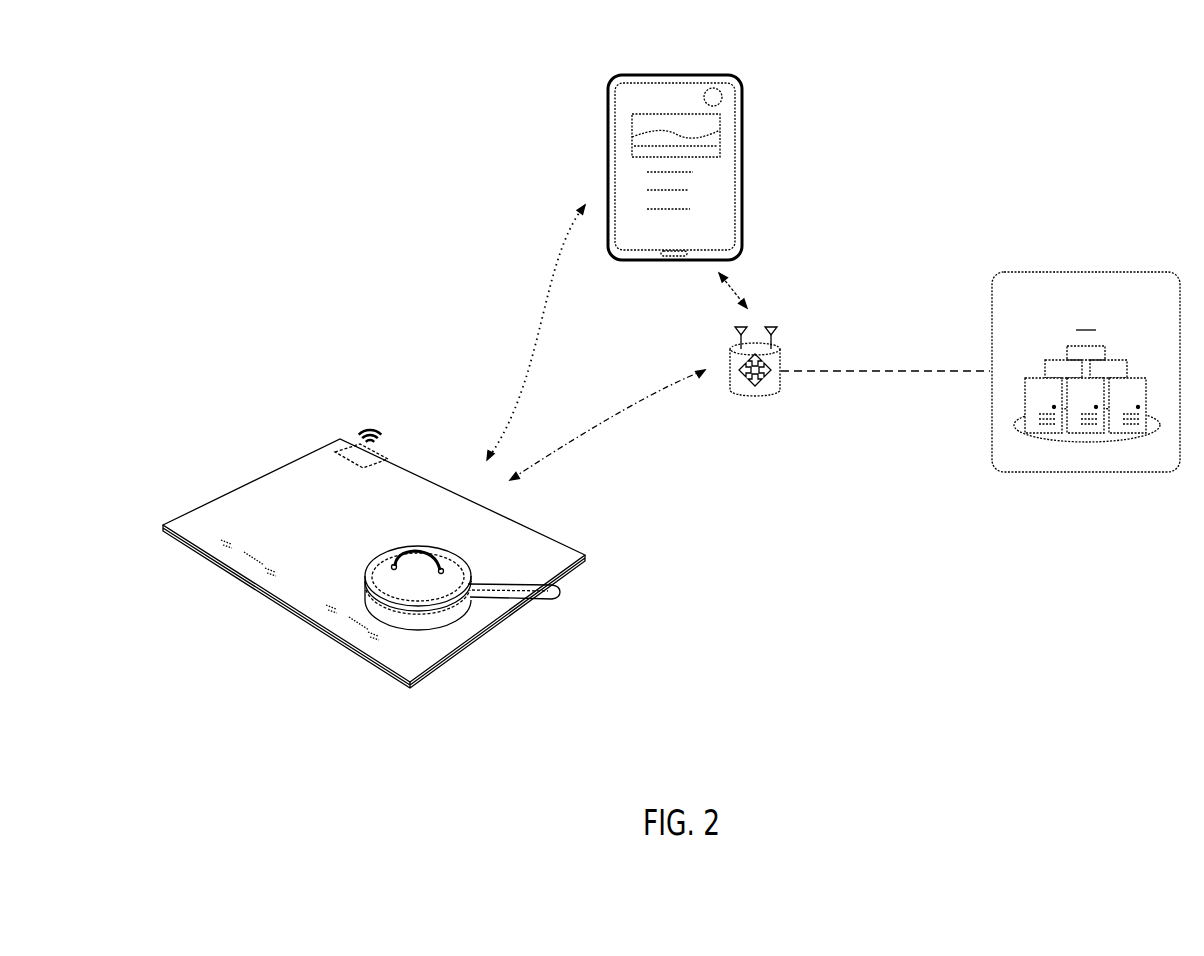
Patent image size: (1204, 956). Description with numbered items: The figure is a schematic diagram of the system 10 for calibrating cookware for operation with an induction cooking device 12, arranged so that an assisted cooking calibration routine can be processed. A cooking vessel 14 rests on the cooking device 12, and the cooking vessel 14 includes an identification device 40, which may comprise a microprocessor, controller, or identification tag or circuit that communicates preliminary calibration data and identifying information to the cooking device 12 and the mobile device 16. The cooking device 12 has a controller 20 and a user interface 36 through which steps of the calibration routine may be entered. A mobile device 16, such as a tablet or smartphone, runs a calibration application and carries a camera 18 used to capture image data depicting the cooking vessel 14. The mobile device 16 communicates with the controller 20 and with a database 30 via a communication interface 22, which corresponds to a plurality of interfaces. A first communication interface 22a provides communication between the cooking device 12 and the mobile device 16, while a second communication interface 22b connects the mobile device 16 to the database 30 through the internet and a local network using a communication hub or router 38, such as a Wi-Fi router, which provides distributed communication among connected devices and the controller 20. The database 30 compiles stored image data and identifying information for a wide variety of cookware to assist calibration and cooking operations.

The system 10 is at (990, 135).
The induction cooking device 12 is at (262, 495).
The cooking vessel 14 is at (418, 595).
The mobile device 16 is at (742, 85).
The camera 18 is at (706, 85).
The controller 20 is at (392, 461).
The communication interface 22 is at (482, 202).
The first communication interface 22a is at (533, 340).
The second communication interface 22b is at (607, 427).
The database 30 is at (1086, 372).
The user interface 36 is at (325, 612).
The router 38 is at (780, 357).
The identification device 40 is at (447, 560).